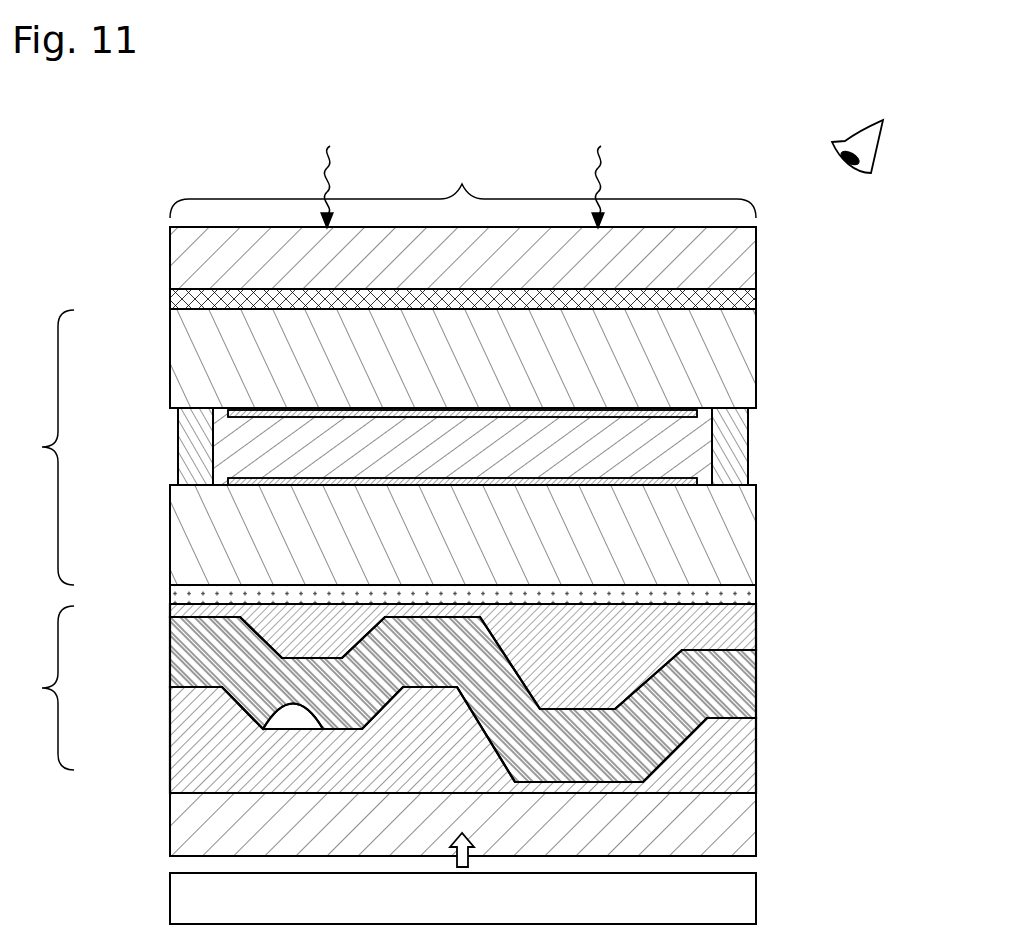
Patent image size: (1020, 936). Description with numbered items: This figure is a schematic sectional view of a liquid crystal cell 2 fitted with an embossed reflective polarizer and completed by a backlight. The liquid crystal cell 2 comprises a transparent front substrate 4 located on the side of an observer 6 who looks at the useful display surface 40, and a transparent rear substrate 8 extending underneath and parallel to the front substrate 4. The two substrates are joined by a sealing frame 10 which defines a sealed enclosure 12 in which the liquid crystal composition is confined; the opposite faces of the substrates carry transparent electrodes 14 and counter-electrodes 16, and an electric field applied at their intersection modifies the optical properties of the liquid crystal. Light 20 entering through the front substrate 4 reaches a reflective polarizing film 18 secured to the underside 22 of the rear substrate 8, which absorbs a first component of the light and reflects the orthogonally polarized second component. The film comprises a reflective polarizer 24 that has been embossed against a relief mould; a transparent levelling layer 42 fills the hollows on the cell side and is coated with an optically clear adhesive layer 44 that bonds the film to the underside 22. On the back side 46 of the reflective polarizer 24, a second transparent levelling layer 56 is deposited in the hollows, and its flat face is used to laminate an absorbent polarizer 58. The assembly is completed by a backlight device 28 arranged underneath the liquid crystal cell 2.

The liquid crystal cell 2 is at (41, 447).
The front substrate 4 is at (735, 345).
The observer 6 is at (871, 160).
The rear substrate 8 is at (738, 524).
The sealing frame 10 is at (722, 437).
The sealed enclosure 12 is at (472, 443).
The electrode 14 is at (248, 417).
The counter-electrode 16 is at (252, 483).
The reflective polarizing film 18 is at (40, 688).
The light 20 is at (325, 156).
The underside of rear substrate 22 is at (290, 587).
The reflective polarizer 24 is at (727, 675).
The backlight device 28 is at (722, 898).
The useful display surface 40 is at (463, 222).
The transparent levelling layer 42 is at (747, 627).
The adhesive layer 44 is at (750, 596).
The back side 46 is at (265, 728).
The transparent levelling layer 56 is at (727, 753).
The absorbent polarizer 58 is at (725, 838).